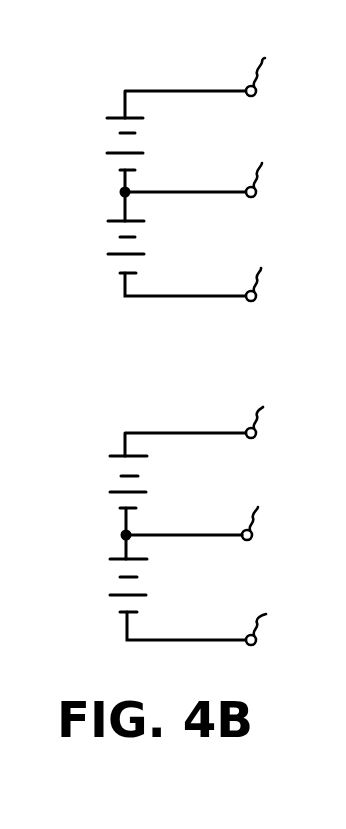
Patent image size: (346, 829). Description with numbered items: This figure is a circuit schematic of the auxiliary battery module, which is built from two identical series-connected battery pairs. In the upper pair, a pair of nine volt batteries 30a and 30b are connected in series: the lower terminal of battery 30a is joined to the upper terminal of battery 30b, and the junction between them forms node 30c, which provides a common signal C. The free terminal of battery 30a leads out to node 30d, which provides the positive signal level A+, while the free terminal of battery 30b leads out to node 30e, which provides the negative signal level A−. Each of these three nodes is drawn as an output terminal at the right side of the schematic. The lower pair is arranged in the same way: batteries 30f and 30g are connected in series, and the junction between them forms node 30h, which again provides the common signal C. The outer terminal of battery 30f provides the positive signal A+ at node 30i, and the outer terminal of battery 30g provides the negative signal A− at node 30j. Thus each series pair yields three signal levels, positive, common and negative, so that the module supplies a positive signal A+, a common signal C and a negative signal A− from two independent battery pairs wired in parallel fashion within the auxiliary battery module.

The 9 volt battery 30a is at (107, 153).
The 9 volt battery 30b is at (108, 254).
The node 30c is at (279, 167).
The node 30d is at (279, 64).
The node 30e is at (279, 273).
The battery 30f is at (110, 492).
The battery 30g is at (110, 595).
The node 30h is at (279, 513).
The node 30i is at (279, 409).
The node 30j is at (281, 614).